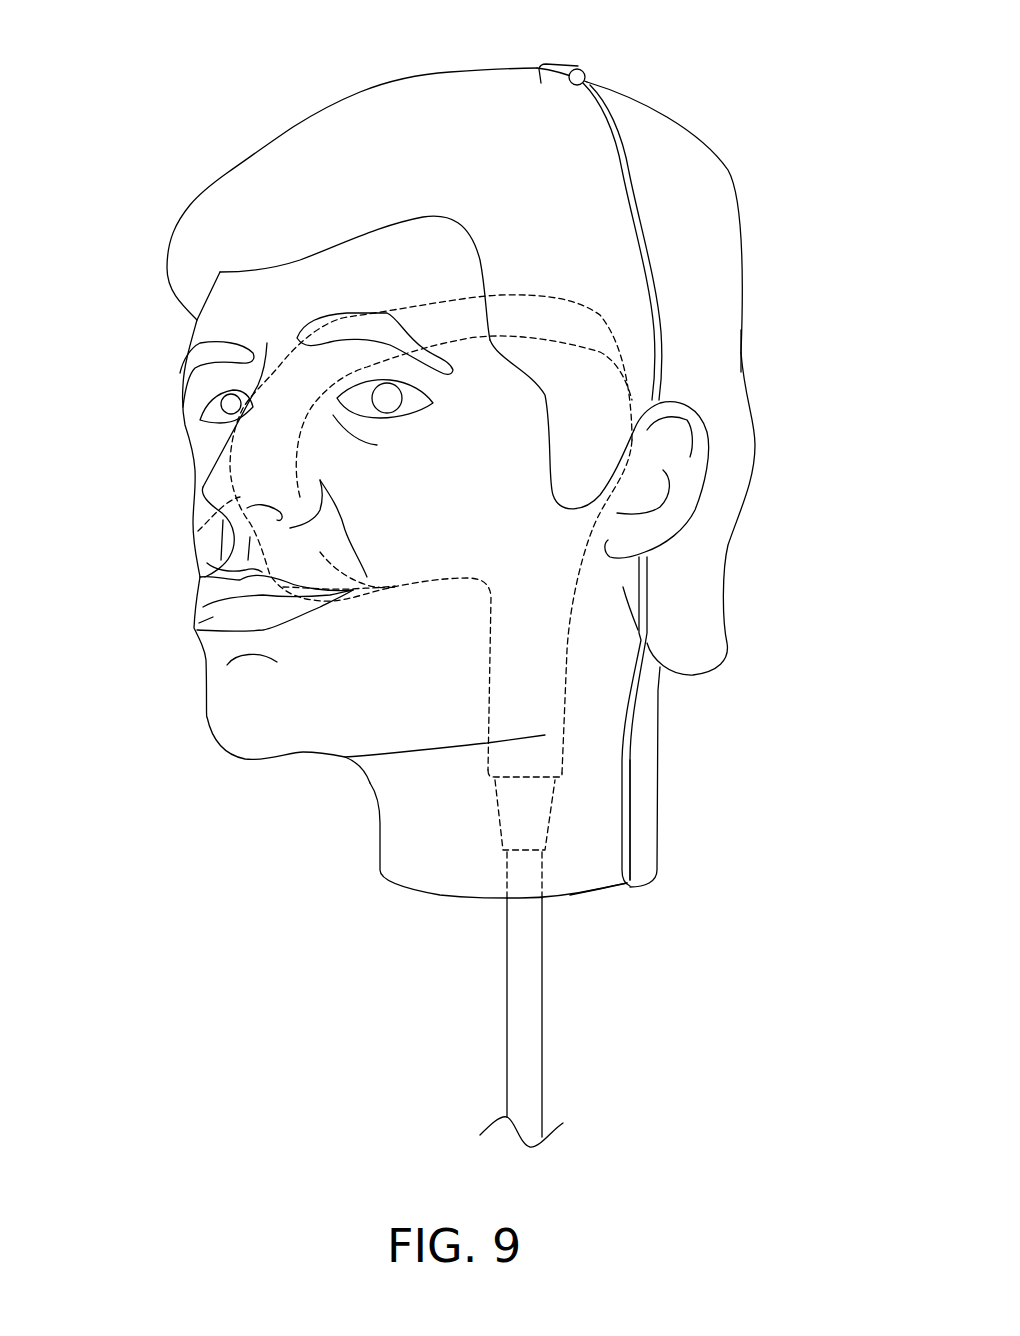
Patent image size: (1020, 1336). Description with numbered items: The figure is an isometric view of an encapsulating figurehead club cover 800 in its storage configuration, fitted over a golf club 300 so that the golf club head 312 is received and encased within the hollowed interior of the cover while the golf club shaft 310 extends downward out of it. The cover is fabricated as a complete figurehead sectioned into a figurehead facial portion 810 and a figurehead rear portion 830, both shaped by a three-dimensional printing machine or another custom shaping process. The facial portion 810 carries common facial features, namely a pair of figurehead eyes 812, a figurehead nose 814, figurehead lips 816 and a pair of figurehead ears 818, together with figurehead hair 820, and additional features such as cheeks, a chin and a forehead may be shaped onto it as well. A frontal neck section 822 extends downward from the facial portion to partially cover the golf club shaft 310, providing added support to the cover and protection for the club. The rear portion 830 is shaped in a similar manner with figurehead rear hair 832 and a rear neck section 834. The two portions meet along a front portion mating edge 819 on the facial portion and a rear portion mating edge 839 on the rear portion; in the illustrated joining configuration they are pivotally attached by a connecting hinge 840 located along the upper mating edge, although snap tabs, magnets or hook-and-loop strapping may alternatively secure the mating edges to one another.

The encapsulating figurehead club cover 800 is at (179, 110).
The figurehead hair 820 is at (315, 105).
The figurehead rear portion 830 is at (773, 223).
The figurehead rear hair 832 is at (740, 352).
The rear neck section 834 is at (657, 738).
The rear portion mating edge 839 is at (630, 790).
The connecting hinge 840 is at (565, 65).
The frontal neck section 822 is at (380, 825).
The front portion mating edge 819 is at (618, 838).
The figurehead facial portion 810 is at (173, 724).
The figurehead eyes 812 is at (183, 410).
The figurehead nose 814 is at (212, 467).
The figurehead lips 816 is at (198, 628).
The figurehead ear 818 is at (700, 487).
The golf club 300 is at (447, 627).
The golf club head 312 is at (198, 531).
The golf club shaft 310 is at (507, 993).